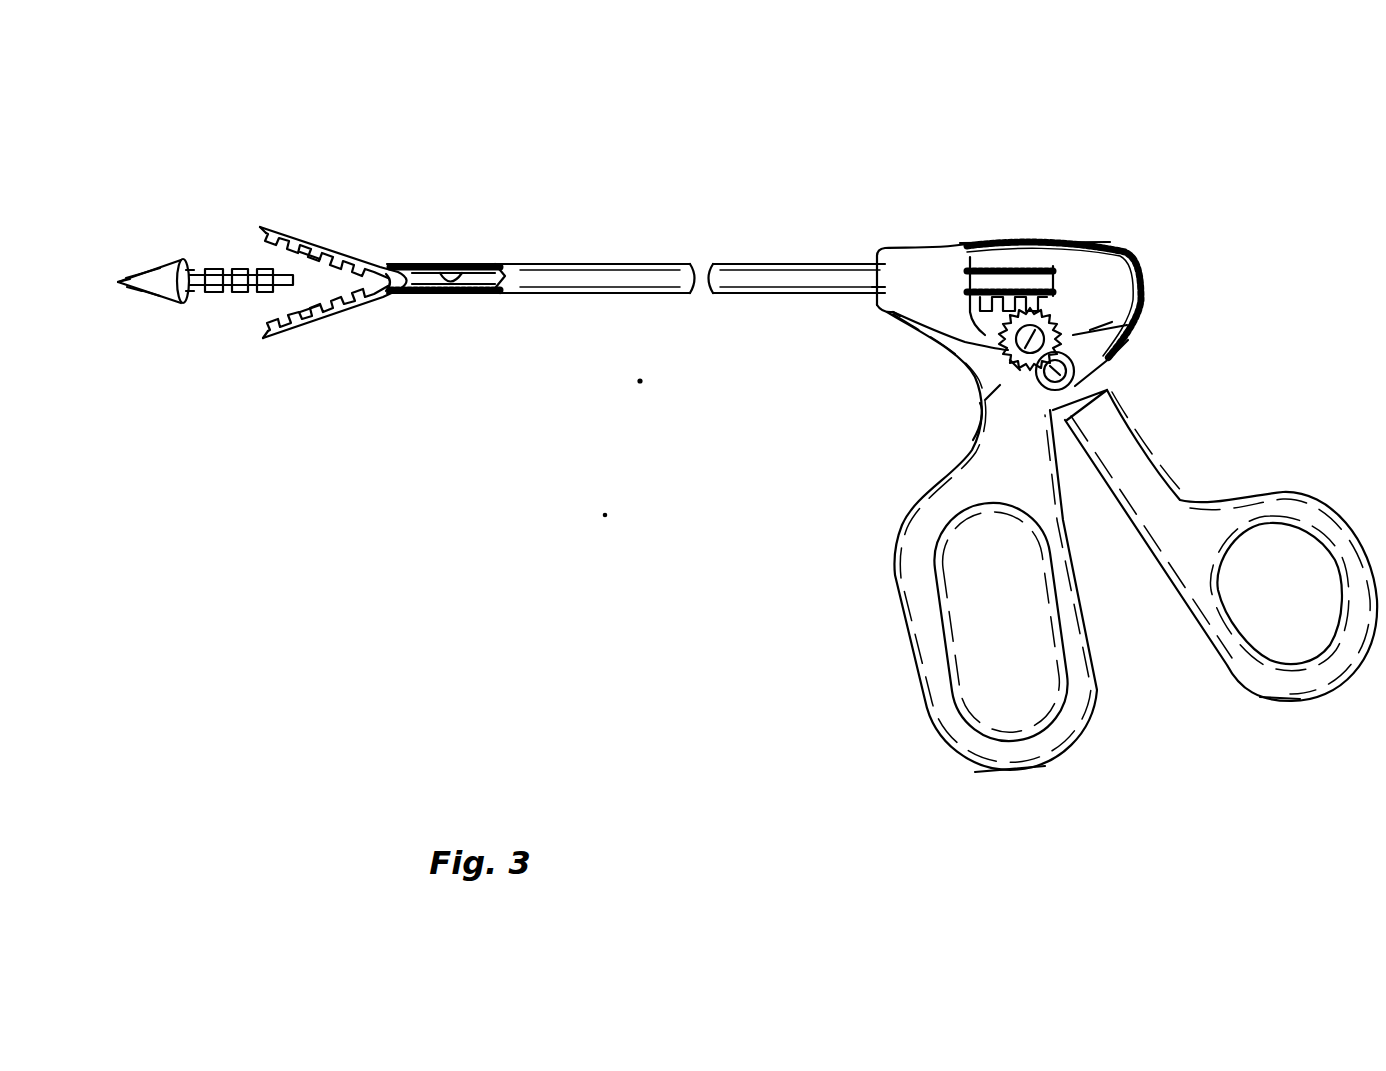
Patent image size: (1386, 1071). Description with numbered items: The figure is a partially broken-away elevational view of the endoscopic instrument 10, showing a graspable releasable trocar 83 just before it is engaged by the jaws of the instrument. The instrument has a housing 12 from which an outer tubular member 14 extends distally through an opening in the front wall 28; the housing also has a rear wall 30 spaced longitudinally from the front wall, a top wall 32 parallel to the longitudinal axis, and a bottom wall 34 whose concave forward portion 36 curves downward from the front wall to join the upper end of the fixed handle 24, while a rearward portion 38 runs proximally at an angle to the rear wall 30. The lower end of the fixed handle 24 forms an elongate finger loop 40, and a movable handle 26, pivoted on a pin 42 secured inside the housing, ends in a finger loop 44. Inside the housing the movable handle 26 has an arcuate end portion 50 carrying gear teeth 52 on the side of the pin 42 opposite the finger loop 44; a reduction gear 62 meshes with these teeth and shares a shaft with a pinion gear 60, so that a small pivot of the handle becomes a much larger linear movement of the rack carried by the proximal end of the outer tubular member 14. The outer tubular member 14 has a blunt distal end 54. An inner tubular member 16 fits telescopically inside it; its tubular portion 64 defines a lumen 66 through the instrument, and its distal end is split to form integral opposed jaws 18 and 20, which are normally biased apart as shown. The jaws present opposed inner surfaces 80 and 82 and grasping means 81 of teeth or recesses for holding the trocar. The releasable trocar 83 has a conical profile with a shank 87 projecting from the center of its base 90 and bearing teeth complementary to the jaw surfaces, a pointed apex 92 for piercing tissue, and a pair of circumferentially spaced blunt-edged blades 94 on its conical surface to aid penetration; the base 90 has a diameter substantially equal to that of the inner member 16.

The endoscopic instrument 10 is at (1177, 216).
The housing 12 is at (889, 252).
The outer tubular member 14 is at (536, 264).
The inner tubular member 16 is at (479, 263).
The jaw 18 is at (270, 222).
The jaw 20 is at (266, 341).
The fixed handle 24 is at (899, 576).
The movable handle 26 is at (1284, 490).
The front wall 28 is at (874, 289).
The rear wall 30 is at (1150, 265).
The top wall 32 is at (986, 242).
The bottom wall 34 is at (897, 312).
The concave forward portion 36 is at (973, 440).
The rearward portion 38 is at (1082, 357).
The finger loop 40 is at (1010, 773).
The pin 42 is at (1080, 378).
The finger loop 44 is at (1285, 702).
The arcuate end portion 50 is at (1003, 382).
The gear teeth 52 is at (1082, 330).
The distal end 54 is at (386, 298).
The pinion gear 60 is at (1004, 356).
The reduction gear 62 is at (1004, 348).
The tubular portion 64 is at (470, 296).
The lumen 66 is at (452, 268).
The inner surface 80 is at (320, 266).
The grasping means 81 is at (241, 268).
The inner surface 82 is at (298, 295).
The releasable trocar 83 is at (117, 264).
The shank 87 is at (226, 270).
The base 90 is at (194, 292).
The apex 92 is at (116, 284).
The blunt-edged blades 94 is at (150, 268).